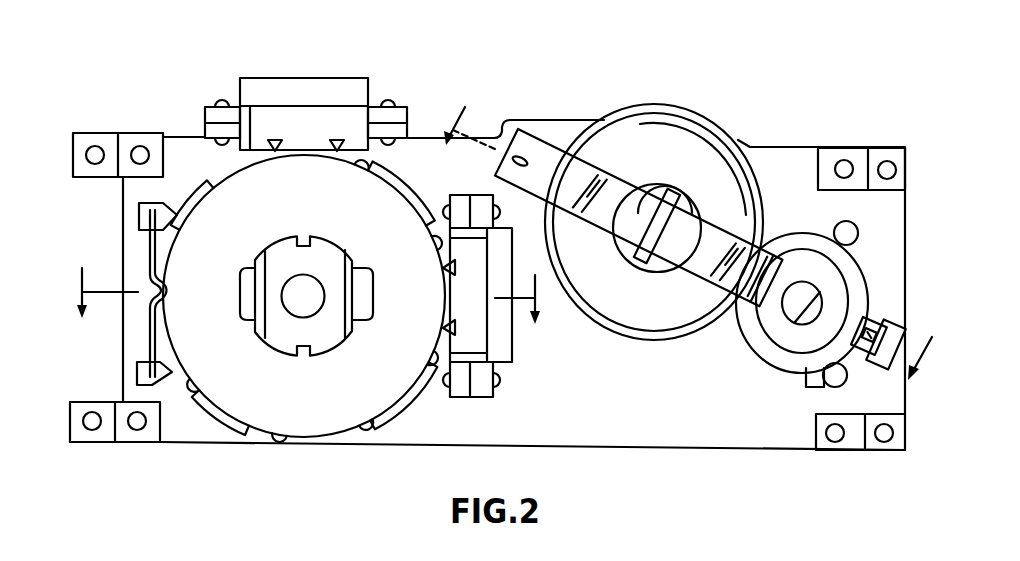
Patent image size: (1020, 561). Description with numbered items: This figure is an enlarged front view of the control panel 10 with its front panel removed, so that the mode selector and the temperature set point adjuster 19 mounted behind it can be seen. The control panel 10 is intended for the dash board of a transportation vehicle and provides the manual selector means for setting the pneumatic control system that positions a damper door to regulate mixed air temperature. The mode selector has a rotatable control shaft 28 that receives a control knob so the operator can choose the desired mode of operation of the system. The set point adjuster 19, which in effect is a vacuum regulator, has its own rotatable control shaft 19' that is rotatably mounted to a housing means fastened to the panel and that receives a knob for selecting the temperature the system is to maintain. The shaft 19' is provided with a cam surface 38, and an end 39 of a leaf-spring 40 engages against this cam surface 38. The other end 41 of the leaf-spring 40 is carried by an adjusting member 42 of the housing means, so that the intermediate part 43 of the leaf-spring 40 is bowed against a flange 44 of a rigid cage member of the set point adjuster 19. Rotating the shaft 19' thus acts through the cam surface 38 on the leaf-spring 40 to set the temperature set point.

The control panel 10 is at (506, 225).
The set point adjuster 19 is at (487, 277).
The control shaft 19' is at (865, 295).
The control shaft 28 is at (317, 283).
The cam surface 38 is at (831, 281).
The end of leaf-spring 39 is at (782, 266).
The leaf-spring 40 is at (613, 190).
The other end of leaf-spring 41 is at (547, 152).
The adjusting member 42 is at (523, 158).
The intermediate part of leaf-spring 43 is at (615, 187).
The flange 44 is at (681, 222).